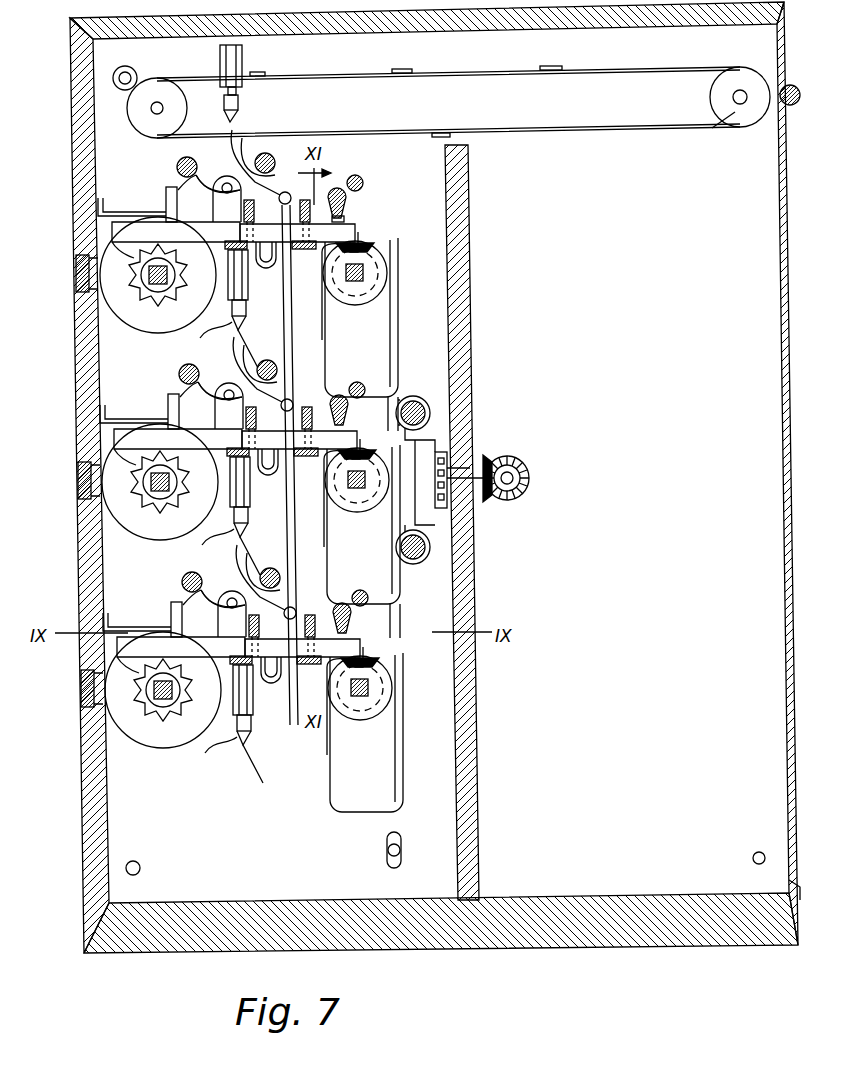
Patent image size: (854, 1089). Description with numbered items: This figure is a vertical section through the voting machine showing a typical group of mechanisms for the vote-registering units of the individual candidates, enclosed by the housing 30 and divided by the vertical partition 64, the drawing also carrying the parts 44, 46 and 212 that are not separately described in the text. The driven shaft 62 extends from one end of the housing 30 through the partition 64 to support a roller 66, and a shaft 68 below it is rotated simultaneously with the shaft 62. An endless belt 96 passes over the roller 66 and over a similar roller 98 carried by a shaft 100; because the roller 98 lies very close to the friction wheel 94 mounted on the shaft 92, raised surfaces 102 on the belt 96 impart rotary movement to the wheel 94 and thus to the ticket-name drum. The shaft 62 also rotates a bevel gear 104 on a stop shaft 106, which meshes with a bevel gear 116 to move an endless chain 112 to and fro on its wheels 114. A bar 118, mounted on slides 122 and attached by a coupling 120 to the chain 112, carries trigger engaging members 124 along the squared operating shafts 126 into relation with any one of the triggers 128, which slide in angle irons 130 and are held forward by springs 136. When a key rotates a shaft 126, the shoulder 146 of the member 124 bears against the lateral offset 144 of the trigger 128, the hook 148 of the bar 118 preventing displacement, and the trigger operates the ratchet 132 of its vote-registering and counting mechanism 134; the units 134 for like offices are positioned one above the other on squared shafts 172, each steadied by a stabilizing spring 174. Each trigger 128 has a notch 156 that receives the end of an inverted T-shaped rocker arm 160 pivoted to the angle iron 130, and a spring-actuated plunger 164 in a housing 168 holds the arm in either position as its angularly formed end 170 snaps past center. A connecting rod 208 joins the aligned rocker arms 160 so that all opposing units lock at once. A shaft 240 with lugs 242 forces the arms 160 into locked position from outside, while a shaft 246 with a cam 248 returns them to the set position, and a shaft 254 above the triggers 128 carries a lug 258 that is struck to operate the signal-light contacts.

The housing 30 is at (583, 946).
The bearing bracket 44 is at (76, 272).
The right side wall 46 is at (779, 277).
The shaft 62 is at (732, 97).
The vertical partition 64 is at (714, 406).
The roller 66 is at (738, 120).
The shaft 68 is at (752, 858).
The shaft 92 is at (136, 77).
The friction wheel 94 is at (128, 70).
The endless belt 96 is at (548, 128).
The roller 98 is at (168, 105).
The shaft 100 is at (126, 112).
The raised surfaces 102 is at (548, 67).
The bevel gear 104 is at (531, 479).
The stop shaft 106 is at (512, 474).
The endless chain 112 is at (446, 500).
The wheels 114 is at (450, 486).
The bevel gear 116 is at (488, 458).
The bar 118 is at (399, 345).
The coupling 120 is at (426, 434).
The slides 122 is at (422, 409).
The trigger engaging member 124 is at (378, 290).
The operating shaft 126 is at (360, 496).
The trigger 128 is at (128, 234).
The angle iron 130 is at (292, 249).
The ratchet 132 is at (150, 505).
The vote-registering and counting mechanism 134 is at (122, 284).
The spring 136 is at (266, 259).
The lateral offset 144 is at (360, 238).
The shoulder 146 is at (372, 252).
The hook 148 is at (387, 276).
The notch 156 is at (166, 198).
The rocker arm 160 is at (246, 130).
The plunger 164 is at (240, 100).
The housing 168 is at (243, 52).
The angularly formed end 170 is at (228, 522).
The squared shaft 172 is at (150, 283).
The stabilizing spring 174 is at (110, 205).
The connecting rod 208 is at (292, 325).
The pin 212 is at (361, 178).
The shaft 240 is at (185, 159).
The lugs 242 is at (177, 172).
The shaft 246 is at (278, 157).
The cam 248 is at (277, 140).
The shaft 254 is at (347, 198).
The lug 258 is at (346, 217).